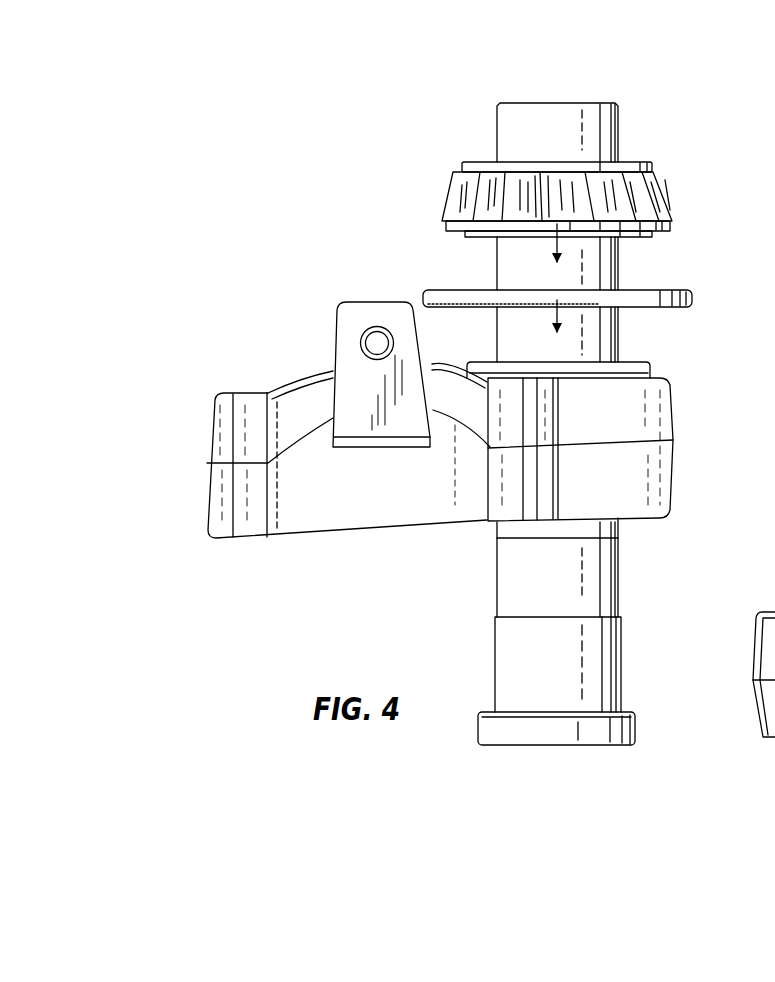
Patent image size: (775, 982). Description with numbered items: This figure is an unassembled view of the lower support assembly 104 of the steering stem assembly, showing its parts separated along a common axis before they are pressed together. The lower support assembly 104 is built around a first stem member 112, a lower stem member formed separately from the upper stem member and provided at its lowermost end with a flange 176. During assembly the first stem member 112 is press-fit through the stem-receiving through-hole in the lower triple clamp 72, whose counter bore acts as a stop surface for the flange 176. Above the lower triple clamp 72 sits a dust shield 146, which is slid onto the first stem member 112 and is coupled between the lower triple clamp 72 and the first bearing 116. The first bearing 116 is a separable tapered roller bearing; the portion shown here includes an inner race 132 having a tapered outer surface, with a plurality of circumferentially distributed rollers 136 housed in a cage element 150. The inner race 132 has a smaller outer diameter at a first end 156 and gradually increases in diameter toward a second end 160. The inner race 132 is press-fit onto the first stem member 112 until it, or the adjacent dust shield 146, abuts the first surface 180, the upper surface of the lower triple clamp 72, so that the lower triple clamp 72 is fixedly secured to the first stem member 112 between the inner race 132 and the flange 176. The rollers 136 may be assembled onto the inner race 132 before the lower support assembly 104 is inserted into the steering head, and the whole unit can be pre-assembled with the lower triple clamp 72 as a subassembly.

The lower support assembly 104 is at (356, 134).
The first stem member 112 is at (525, 645).
The flange 176 is at (525, 732).
The first bearing 116 is at (429, 203).
The inner race 132 is at (652, 162).
The rollers 136 is at (458, 200).
The cage element 150 is at (577, 192).
The first end 156 is at (659, 149).
The second end 160 is at (673, 236).
The dust shield 146 is at (690, 304).
The first surface 180 is at (636, 356).
The lower triple clamp 72 is at (345, 507).